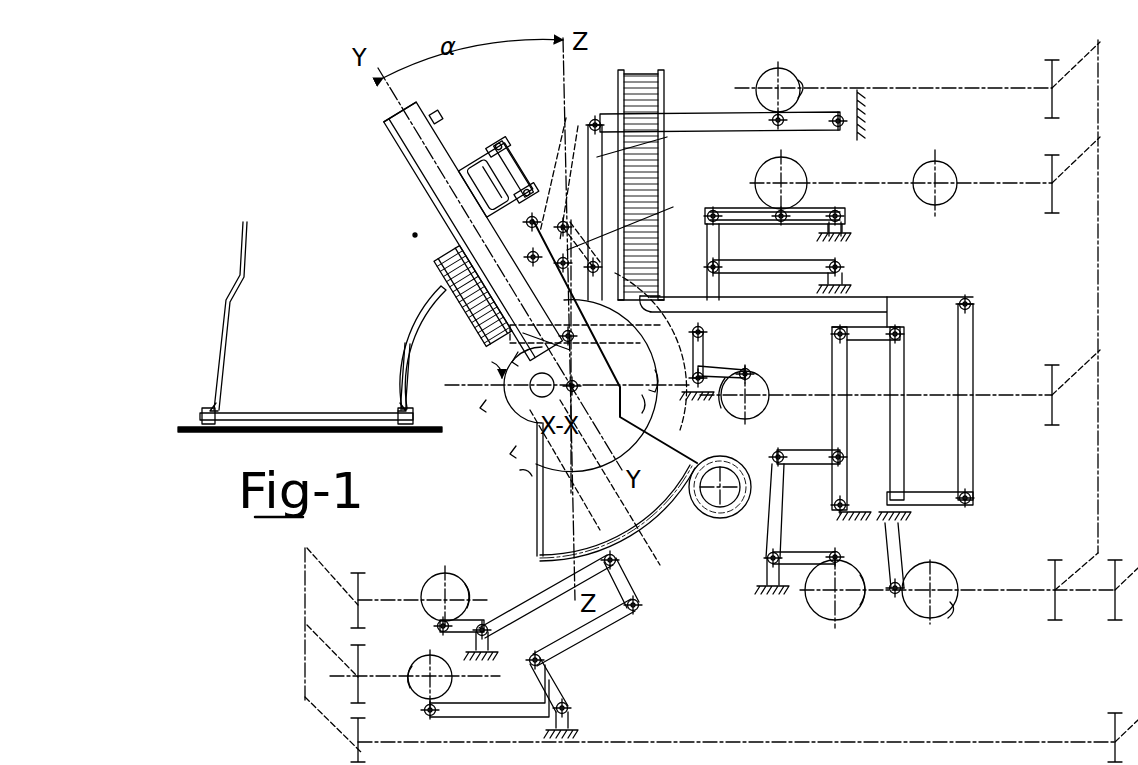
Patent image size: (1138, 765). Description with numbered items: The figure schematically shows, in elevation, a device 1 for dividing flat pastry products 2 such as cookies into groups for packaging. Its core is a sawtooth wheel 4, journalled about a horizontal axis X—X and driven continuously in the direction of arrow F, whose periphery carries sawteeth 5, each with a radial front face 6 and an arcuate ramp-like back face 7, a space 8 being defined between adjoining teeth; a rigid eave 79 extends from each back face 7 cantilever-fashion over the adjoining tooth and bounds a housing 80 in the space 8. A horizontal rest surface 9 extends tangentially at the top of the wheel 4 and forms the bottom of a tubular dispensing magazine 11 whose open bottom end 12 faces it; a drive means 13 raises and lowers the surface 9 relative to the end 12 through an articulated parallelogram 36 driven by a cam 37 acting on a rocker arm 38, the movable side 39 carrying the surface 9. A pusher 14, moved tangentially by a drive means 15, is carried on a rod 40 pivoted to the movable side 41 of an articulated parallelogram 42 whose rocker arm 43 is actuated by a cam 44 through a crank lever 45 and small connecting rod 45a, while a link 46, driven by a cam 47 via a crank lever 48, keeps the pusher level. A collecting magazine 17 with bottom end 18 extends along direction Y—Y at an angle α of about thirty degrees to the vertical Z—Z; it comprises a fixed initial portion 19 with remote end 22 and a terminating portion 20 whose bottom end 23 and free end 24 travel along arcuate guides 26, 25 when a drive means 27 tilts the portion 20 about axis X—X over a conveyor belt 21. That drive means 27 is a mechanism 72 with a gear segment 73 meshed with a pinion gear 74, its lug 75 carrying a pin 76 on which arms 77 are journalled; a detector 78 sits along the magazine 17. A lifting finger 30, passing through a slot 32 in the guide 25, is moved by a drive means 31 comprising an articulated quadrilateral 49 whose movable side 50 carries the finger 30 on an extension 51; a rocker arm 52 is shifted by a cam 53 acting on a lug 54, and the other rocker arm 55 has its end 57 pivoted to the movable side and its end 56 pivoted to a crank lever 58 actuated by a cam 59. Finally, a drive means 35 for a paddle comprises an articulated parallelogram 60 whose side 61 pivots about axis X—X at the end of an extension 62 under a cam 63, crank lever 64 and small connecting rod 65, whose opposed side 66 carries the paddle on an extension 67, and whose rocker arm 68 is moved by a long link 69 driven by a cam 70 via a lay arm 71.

The device 1 is at (263, 154).
The flat pastry products 2 is at (644, 72).
The sawtooth wheel 4 is at (500, 446).
The sawteeth 5 is at (512, 354).
The front face 6 is at (492, 364).
The back face 7 is at (480, 402).
The space 8 is at (500, 428).
The rest surface 9 is at (604, 342).
The tubular magazine 11 is at (624, 90).
The bottom end 12 is at (640, 270).
The drive means 13 is at (750, 184).
The pusher 14 is at (706, 294).
The drive means 15 is at (872, 614).
The collecting magazine 17 is at (392, 138).
The bottom end 18 is at (456, 333).
The initial portion 19 is at (442, 296).
The terminating portion 20 is at (409, 158).
The conveyor belt 21 is at (250, 430).
The remote end 22 is at (466, 248).
The bottom end 23 is at (436, 270).
The free end 24 is at (394, 119).
The arcuate guide 25 is at (398, 387).
The arcuate guide 26 is at (234, 326).
The drive means 27 is at (670, 510).
The lifting finger 30 is at (574, 386).
The drive means 31 is at (582, 662).
The slot 32 is at (448, 272).
The drive means 35 is at (800, 90).
The articulated parallelogram 36 is at (812, 270).
The cam 37 is at (794, 176).
The rocker arm 38 is at (820, 210).
The movable side 39 is at (711, 246).
The rod 40 is at (858, 302).
The movable side 41 is at (860, 358).
The articulated parallelogram 42 is at (906, 400).
The rocker arm 43 is at (846, 412).
The cam 44 is at (822, 606).
The crank lever 45 is at (788, 534).
The small connecting rod 45a is at (806, 452).
The link 46 is at (976, 322).
The cam 47 is at (936, 604).
The crank lever 48 is at (900, 550).
The articulated quadrilateral 49 is at (610, 594).
The movable side 50 is at (628, 563).
The extension 51 is at (548, 532).
The rocker arm 52 is at (544, 606).
The cam 53 is at (438, 582).
The lug 54 is at (444, 648).
The rocker arm 55 is at (632, 624).
The end 56 is at (578, 718).
The end 57 is at (640, 622).
The crank lever 58 is at (542, 702).
The cam 59 is at (420, 694).
The articulated parallelogram 60 is at (600, 118).
The side 61 is at (634, 215).
The extension 62 is at (574, 334).
The cam 63 is at (758, 394).
The crank lever 64 is at (702, 348).
The small connecting rod 65 is at (746, 376).
The opposed side 66 is at (539, 228).
The extension 67 is at (490, 186).
The rocker arm 68 is at (572, 228).
The long link 69 is at (649, 152).
The cam 70 is at (766, 78).
The lay arm 71 is at (694, 128).
The mechanism 72 is at (704, 462).
The gear segment 73 is at (636, 594).
The pinion gear 74 is at (737, 510).
The lug 75 is at (500, 156).
The pin 76 is at (520, 166).
The arms 77 is at (482, 176).
The detector 78 is at (442, 116).
The eave 79 is at (652, 404).
The housing 80 is at (514, 466).